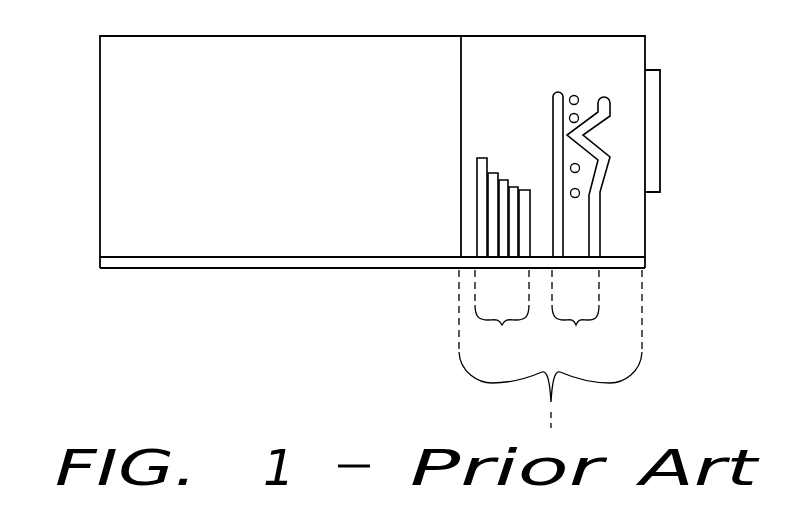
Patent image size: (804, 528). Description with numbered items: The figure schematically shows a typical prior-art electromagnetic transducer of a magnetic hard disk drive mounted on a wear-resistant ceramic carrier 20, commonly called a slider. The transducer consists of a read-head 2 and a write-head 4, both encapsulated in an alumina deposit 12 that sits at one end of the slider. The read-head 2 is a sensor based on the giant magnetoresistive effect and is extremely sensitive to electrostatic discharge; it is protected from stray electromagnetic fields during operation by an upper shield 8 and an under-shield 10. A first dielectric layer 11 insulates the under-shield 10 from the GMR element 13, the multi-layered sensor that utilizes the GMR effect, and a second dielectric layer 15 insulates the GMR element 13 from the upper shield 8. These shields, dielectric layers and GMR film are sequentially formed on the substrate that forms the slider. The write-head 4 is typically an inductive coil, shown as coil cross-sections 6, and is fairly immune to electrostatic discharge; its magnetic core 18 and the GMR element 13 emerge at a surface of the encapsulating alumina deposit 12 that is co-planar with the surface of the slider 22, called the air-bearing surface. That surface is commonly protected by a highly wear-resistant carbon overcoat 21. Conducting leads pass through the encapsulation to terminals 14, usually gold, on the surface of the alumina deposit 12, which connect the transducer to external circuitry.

The ceramic carrier 20 is at (120, 140).
The alumina deposit 12 is at (513, 58).
The carbon overcoat 21 is at (186, 263).
The surface of the slider 22 is at (286, 268).
The under-shield 10 is at (480, 158).
The first dielectric layer 11 is at (492, 173).
The GMR element 13 is at (504, 180).
The second dielectric layer 15 is at (515, 187).
The upper shield 8 is at (527, 197).
The magnetic core 18 is at (597, 208).
The coil cross-sections 6 is at (573, 95).
The terminals 14 is at (652, 104).
The read-head 2 is at (502, 314).
The write-head 4 is at (575, 314).